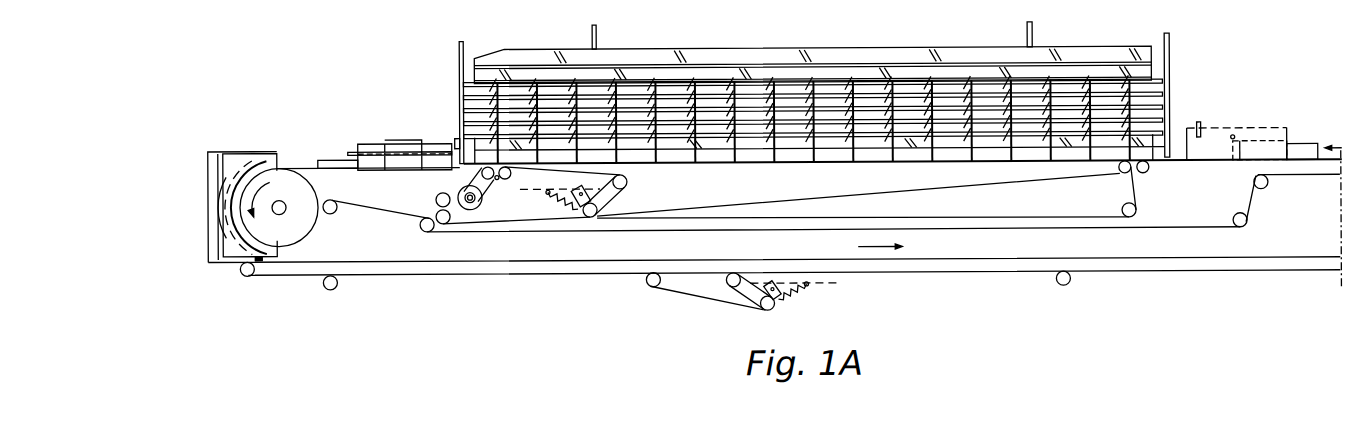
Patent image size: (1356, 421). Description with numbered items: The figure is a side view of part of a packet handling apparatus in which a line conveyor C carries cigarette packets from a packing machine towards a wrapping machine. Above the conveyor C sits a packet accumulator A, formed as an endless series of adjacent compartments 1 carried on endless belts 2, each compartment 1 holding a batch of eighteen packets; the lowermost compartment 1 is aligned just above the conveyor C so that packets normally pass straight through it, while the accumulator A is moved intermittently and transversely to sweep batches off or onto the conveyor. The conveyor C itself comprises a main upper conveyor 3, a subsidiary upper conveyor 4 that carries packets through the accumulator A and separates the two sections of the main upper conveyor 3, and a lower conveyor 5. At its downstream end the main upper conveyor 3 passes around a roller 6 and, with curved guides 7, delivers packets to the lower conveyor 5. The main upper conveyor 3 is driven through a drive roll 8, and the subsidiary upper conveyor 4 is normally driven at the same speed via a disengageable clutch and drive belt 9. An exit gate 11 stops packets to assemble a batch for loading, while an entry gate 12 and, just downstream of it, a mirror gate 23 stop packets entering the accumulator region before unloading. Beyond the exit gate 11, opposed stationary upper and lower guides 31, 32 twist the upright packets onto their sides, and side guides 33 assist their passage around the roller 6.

The compartments 1 is at (1090, 63).
The endless belts 2 is at (598, 38).
The main upper conveyor 3 is at (300, 164).
The subsidiary upper conveyor 4 is at (828, 163).
The lower conveyor 5 is at (972, 250).
The roller 6 is at (300, 228).
The curved guides 7 is at (217, 249).
The drive roll 8 is at (456, 190).
The drive belt 9 is at (496, 178).
The exit gate 11 is at (456, 150).
The entry gate 12 is at (1241, 125).
The mirror gate 23 is at (1203, 120).
The upper guide 31 is at (384, 138).
The lower guide 32 is at (350, 156).
The side guides 33 is at (243, 169).
The packet accumulator A is at (1176, 76).
The line conveyor C is at (905, 276).